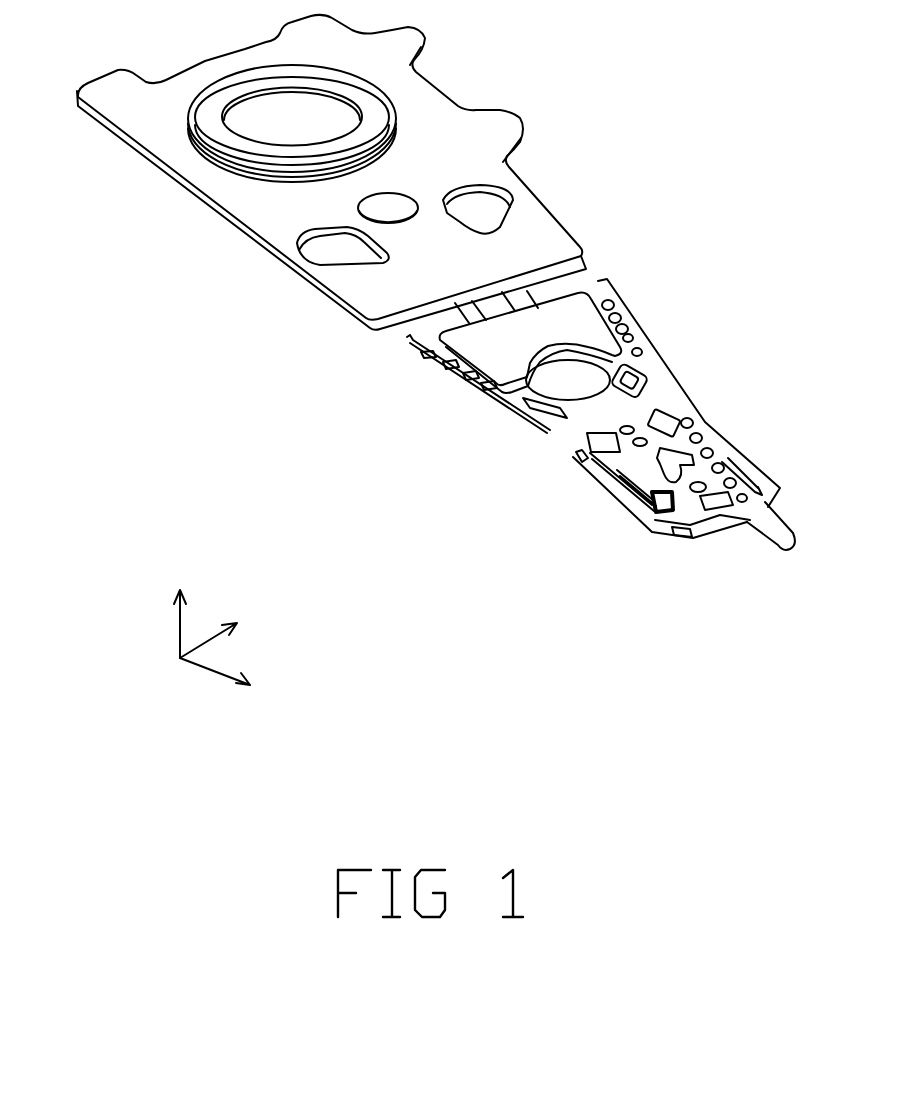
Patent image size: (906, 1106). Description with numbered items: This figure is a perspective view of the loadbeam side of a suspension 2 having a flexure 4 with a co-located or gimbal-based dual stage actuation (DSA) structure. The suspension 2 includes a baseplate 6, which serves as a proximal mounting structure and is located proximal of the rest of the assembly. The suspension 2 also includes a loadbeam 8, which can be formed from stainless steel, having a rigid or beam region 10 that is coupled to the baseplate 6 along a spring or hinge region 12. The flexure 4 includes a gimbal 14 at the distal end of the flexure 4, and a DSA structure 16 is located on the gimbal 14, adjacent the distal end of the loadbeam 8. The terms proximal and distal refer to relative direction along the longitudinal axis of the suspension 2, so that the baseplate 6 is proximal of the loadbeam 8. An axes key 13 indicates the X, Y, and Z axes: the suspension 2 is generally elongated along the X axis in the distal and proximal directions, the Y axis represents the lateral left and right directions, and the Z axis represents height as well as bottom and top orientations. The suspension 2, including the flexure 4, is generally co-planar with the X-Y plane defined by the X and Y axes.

The suspension 2 is at (424, 363).
The flexure 4 is at (559, 487).
The baseplate 6 is at (331, 172).
The loadbeam 8 is at (617, 383).
The rigid or beam region 10 is at (682, 400).
The spring or hinge region 12 is at (428, 362).
The axes key 13 is at (165, 667).
The gimbal 14 is at (605, 558).
The DSA structure 16 is at (695, 586).